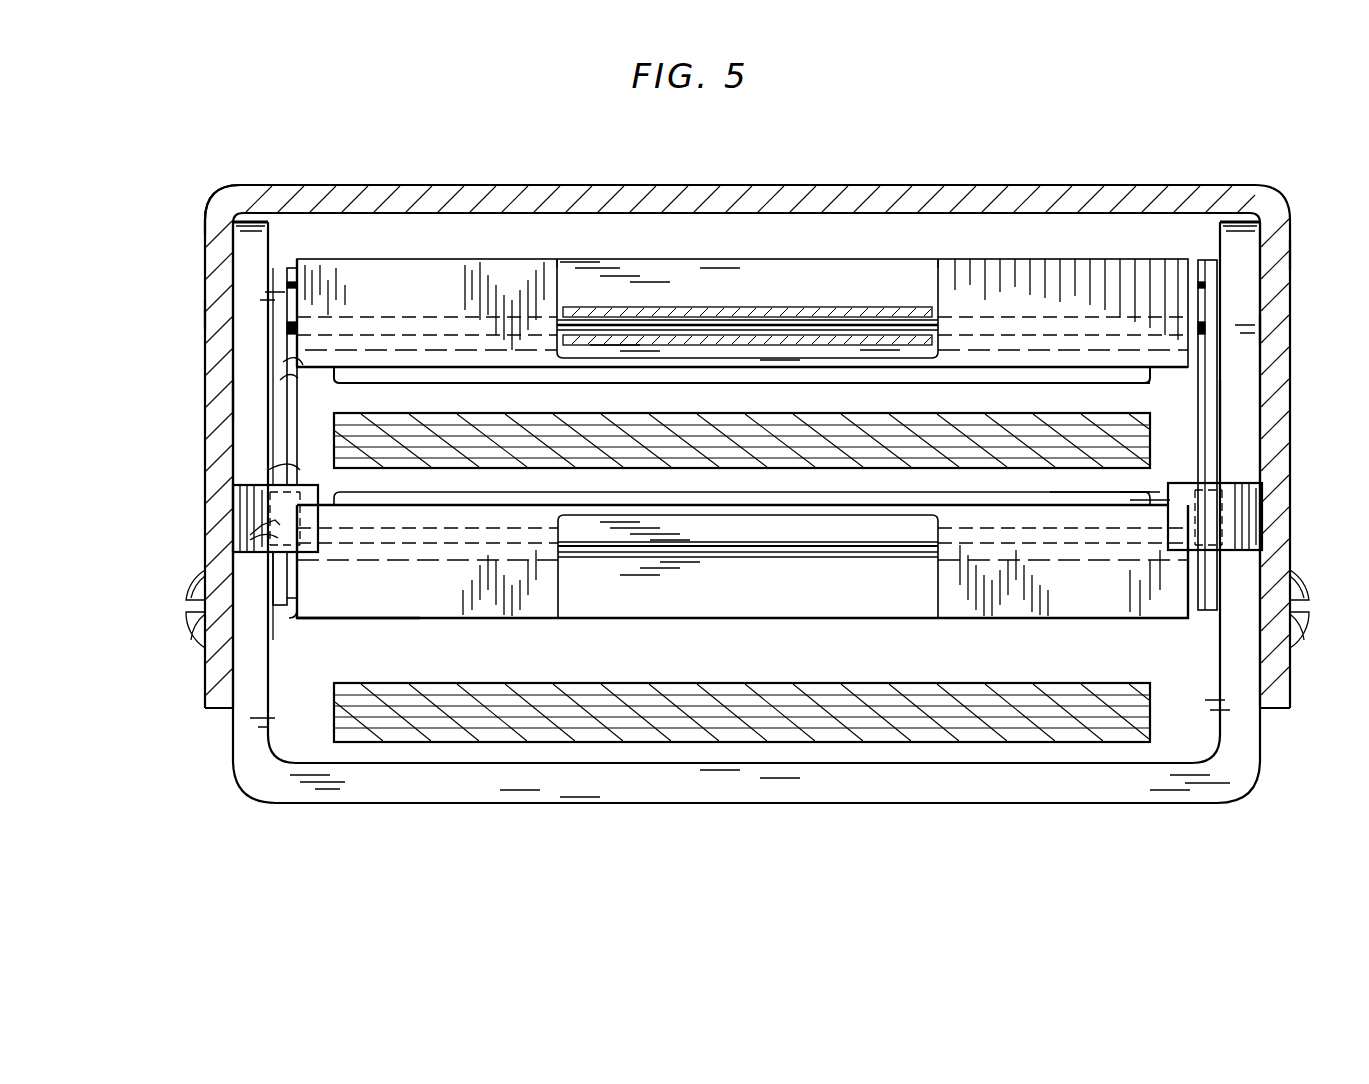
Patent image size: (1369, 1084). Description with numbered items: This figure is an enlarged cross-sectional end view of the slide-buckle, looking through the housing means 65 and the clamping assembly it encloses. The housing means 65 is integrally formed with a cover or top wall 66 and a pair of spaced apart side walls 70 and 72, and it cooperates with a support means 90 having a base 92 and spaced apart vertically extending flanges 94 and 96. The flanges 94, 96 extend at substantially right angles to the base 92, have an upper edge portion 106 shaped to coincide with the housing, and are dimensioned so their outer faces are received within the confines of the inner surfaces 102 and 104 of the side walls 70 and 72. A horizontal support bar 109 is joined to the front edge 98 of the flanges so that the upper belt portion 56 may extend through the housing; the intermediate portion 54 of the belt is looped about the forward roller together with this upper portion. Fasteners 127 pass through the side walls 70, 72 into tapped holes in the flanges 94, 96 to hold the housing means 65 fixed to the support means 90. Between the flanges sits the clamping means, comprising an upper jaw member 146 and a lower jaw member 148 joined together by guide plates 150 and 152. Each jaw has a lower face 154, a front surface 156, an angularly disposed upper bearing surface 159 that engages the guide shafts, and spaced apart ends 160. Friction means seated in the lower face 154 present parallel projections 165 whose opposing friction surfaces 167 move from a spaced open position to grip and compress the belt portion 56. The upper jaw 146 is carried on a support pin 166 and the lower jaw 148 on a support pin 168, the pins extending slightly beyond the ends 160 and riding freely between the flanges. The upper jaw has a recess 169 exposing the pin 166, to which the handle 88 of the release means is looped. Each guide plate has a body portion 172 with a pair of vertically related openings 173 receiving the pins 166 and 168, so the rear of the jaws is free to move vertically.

The intermediate portion 54 is at (383, 733).
The upper belt portion 56 is at (440, 414).
The housing means 65 is at (790, 183).
The top wall 66 is at (1000, 183).
The side wall 70 is at (1282, 300).
The side wall 72 is at (222, 312).
The handle 88 is at (818, 305).
The support means 90 is at (212, 774).
The base 92 is at (808, 765).
The flange 94 is at (232, 224).
The flange 96 is at (1255, 252).
The front edge 98 is at (527, 800).
The inner surface 102 is at (1255, 336).
The inner surface 104 is at (243, 410).
The upper edge portion 106 is at (258, 220).
The support bar 109 is at (1228, 492).
The fasteners 127 is at (188, 609).
The upper jaw member 146 is at (1100, 258).
The lower jaw member 148 is at (1140, 616).
The guide plate 150 is at (268, 472).
The guide plate 152 is at (1200, 410).
The lower face 154 is at (1185, 370).
The front surface 156 is at (1002, 282).
The upper surface 159 is at (362, 620).
The ends 160 is at (292, 274).
The projections 165 is at (1142, 376).
The support pin 166 is at (632, 315).
The friction surface 167 is at (950, 376).
The support pin 168 is at (588, 557).
The recess 169 is at (938, 276).
The body portion 172 is at (282, 437).
The openings 173 is at (312, 380).